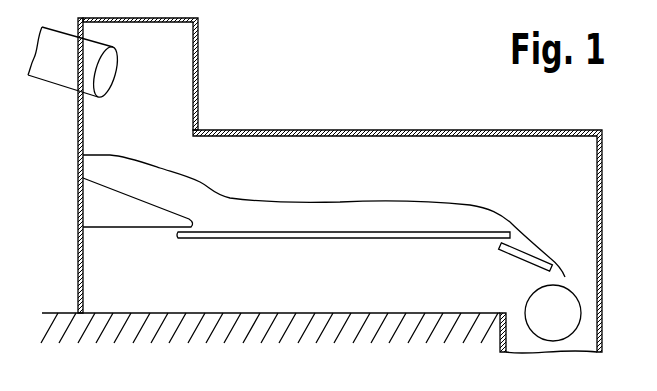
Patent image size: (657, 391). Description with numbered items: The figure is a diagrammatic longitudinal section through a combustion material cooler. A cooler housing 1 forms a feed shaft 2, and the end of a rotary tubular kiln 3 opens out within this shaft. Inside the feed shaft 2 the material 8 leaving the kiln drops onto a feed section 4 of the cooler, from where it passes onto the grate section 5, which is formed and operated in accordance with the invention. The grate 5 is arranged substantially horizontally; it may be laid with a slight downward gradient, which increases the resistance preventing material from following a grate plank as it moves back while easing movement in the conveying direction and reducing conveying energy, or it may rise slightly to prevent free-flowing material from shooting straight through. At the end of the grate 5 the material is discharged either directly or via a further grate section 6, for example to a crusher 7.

The cooler housing 1 is at (314, 130).
The feed shaft 2 is at (172, 67).
The rotary tubular kiln 3 is at (47, 76).
The feed section 4 is at (122, 210).
The grate section 5 is at (361, 232).
The further grate section 6 is at (540, 244).
The crusher 7 is at (567, 306).
The material 8 is at (118, 172).